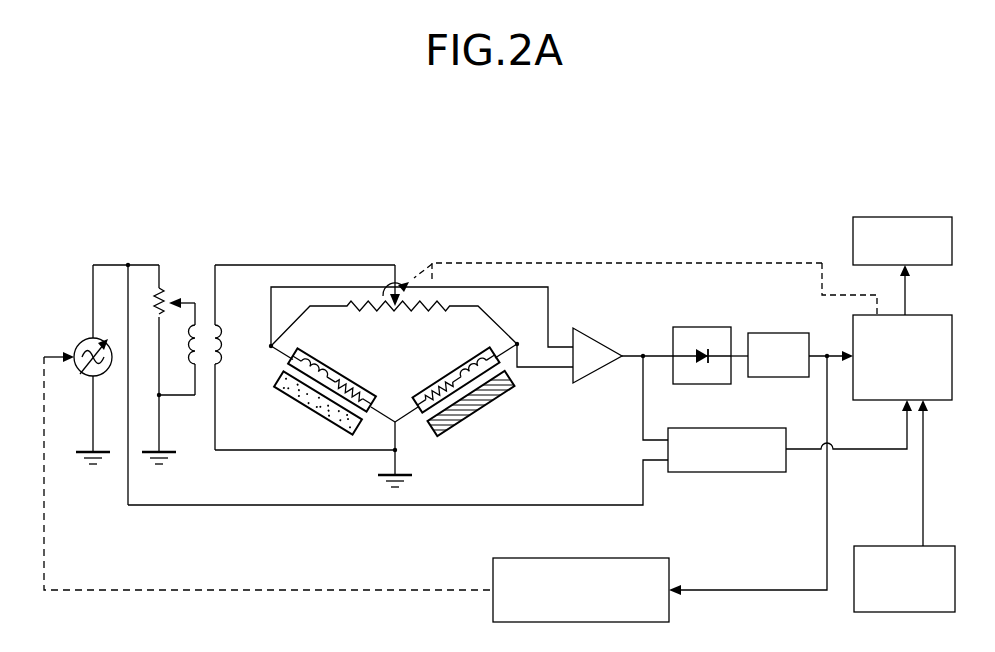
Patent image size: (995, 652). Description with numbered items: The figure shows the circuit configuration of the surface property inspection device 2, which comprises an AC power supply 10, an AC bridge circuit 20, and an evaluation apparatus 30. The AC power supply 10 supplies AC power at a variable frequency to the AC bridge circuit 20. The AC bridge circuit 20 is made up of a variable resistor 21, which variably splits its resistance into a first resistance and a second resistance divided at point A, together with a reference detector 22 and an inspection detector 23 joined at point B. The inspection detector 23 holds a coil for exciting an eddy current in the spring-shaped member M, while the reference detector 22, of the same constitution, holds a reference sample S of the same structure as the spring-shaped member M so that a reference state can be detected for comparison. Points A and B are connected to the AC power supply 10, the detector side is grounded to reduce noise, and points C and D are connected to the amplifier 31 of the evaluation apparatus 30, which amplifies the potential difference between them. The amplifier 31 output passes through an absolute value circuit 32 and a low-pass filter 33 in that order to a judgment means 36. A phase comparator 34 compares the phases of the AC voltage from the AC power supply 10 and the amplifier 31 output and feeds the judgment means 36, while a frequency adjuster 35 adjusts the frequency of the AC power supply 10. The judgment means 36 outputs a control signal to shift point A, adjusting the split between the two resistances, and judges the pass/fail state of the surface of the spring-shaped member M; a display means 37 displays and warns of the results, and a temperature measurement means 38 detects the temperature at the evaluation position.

The surface property inspection device 2 is at (896, 165).
The AC power supply 10 is at (205, 208).
The AC bridge circuit 20 is at (540, 208).
The variable resistor 21 is at (380, 313).
The reference detector 22 is at (363, 387).
The inspection detector 23 is at (460, 364).
The evaluation apparatus 30 is at (960, 204).
The amplifier 31 is at (591, 376).
The absolute value circuit 32 is at (700, 327).
The low-pass filter 33 is at (776, 333).
The phase comparator 34 is at (758, 472).
The frequency adjuster 35 is at (672, 564).
The judgment means 36 is at (942, 400).
The display means 37 is at (853, 230).
The temperature measurement means 38 is at (873, 546).
The reference sample S is at (308, 409).
The spring-shaped member M is at (457, 423).